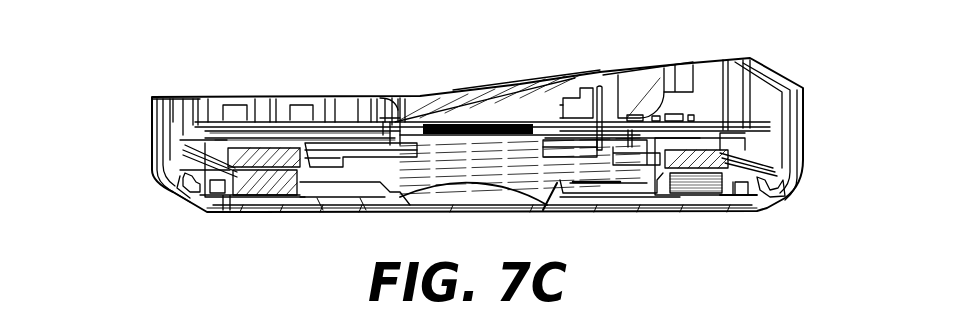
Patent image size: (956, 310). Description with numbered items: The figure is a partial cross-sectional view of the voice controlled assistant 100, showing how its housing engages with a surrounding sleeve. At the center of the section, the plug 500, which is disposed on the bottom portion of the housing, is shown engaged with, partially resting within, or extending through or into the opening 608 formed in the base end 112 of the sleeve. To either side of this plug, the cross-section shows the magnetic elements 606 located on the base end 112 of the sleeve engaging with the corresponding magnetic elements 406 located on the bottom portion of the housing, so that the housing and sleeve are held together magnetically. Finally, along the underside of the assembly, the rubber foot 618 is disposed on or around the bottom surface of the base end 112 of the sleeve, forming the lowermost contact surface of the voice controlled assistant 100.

The voice controlled assistant 100 is at (200, 58).
The base end 112 is at (788, 208).
The magnetic elements 406 is at (705, 147).
The plug 500 is at (548, 207).
The magnetic elements 606 is at (240, 212).
The opening 608 is at (380, 211).
The rubber foot 618 is at (289, 211).